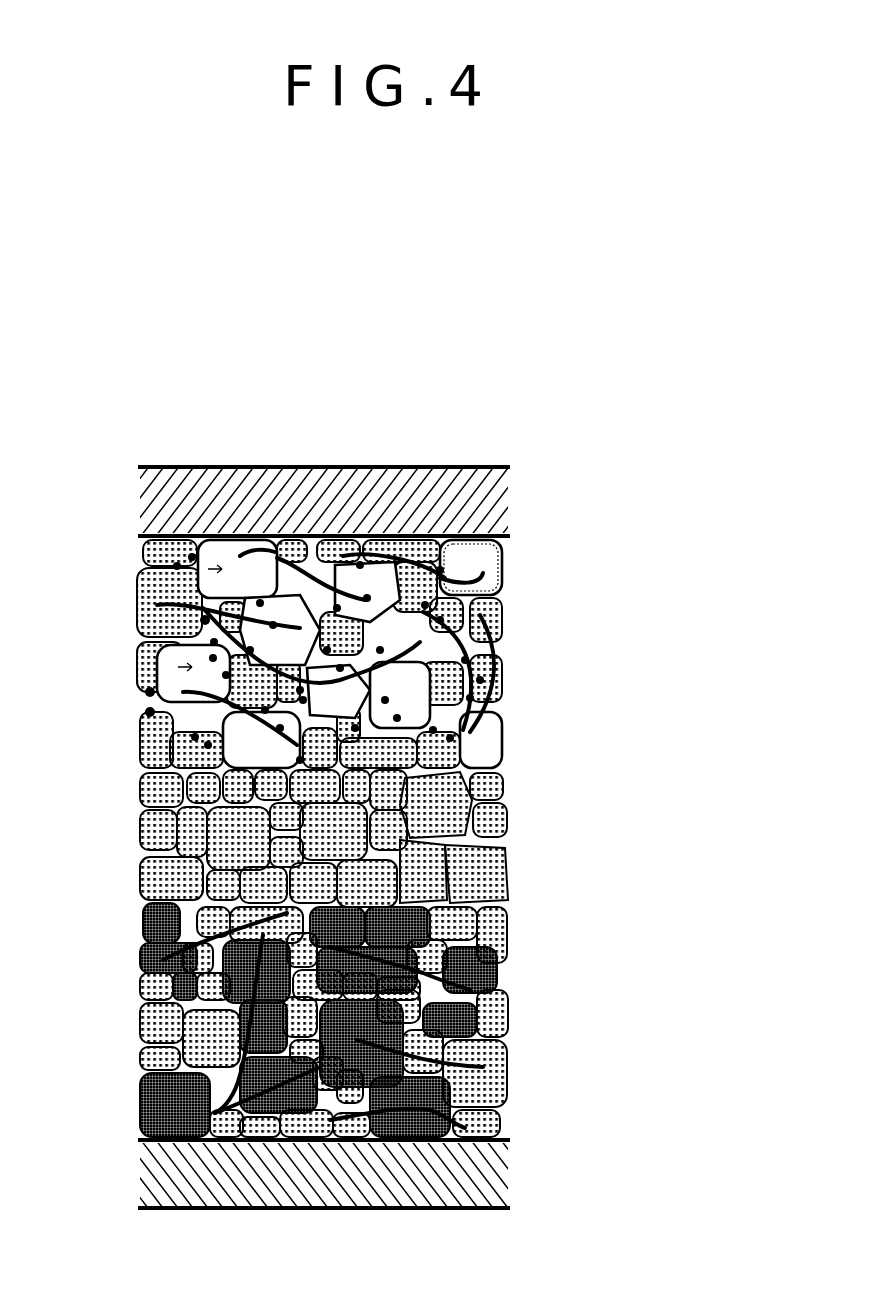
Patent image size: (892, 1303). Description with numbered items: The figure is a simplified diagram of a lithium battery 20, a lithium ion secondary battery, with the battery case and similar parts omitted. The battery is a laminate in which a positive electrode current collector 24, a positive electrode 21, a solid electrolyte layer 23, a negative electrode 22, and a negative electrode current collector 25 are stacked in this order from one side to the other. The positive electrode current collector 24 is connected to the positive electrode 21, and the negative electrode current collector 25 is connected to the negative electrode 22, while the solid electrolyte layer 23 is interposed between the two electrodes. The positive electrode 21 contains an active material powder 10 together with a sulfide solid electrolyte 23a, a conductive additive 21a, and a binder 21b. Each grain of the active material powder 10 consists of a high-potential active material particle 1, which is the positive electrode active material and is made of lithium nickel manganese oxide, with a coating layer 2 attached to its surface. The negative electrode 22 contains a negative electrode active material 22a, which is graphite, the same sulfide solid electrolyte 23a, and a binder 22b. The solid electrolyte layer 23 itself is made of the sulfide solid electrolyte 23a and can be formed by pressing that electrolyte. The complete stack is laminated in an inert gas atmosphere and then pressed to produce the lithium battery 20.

The high-potential active material particle 1 is at (500, 556).
The coating layer 2 is at (500, 583).
The active material powder 10 is at (205, 569).
The lithium battery 20 is at (418, 320).
The positive electrode 21 is at (378, 652).
The conductive additive 21a is at (200, 622).
The binder 21b is at (500, 718).
The negative electrode 22 is at (382, 1018).
The negative electrode active material 22a is at (150, 920).
The binder 22b is at (147, 960).
The solid electrolyte layer 23 is at (366, 821).
The sulfide solid electrolyte 23a is at (150, 607).
The positive electrode current collector 24 is at (495, 492).
The negative electrode current collector 25 is at (495, 1170).